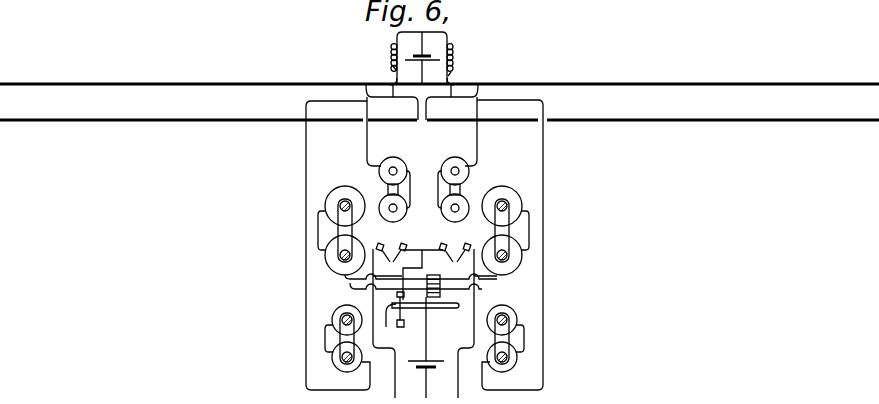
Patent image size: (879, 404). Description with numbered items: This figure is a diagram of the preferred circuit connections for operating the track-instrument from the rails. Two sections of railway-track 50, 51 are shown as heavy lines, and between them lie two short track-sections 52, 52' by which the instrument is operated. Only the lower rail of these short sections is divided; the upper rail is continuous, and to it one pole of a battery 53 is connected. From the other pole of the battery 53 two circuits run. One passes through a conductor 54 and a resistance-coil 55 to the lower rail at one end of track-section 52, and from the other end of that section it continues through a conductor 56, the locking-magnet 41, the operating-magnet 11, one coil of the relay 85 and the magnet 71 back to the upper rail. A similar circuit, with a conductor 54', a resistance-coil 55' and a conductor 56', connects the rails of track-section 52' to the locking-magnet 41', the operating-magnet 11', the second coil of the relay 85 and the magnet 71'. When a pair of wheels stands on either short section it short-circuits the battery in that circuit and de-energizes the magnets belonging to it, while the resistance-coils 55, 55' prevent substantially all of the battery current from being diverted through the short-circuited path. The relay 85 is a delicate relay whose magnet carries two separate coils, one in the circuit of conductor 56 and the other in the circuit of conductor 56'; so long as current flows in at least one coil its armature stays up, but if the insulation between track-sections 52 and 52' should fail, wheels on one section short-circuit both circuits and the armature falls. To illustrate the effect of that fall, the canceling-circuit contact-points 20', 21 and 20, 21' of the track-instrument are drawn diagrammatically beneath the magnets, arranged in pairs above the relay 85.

The section of railway-track 50 is at (653, 102).
The section of railway-track 51 is at (208, 102).
The short track-section 52 is at (452, 102).
The short track-section 52' is at (391, 102).
The battery 53 is at (422, 58).
The conductor 54 is at (464, 70).
The conductor 54' is at (375, 70).
The resistance-coil 55 is at (459, 52).
The resistance-coil 55' is at (381, 56).
The conductor 56 is at (519, 243).
The conductor 56' is at (324, 243).
The operating-magnet 11 is at (511, 225).
The operating-magnet 11' is at (337, 226).
The locking-magnet 41 is at (470, 189).
The locking-magnet 41' is at (381, 189).
The magnet 71 is at (513, 330).
The magnet 71' is at (337, 332).
The canceling-circuit contact-point 20 is at (377, 244).
The canceling-circuit contact-point 20' is at (471, 244).
The canceling-circuit contact-point 21 is at (442, 244).
The canceling-circuit contact-point 21' is at (404, 244).
The relay 85 is at (446, 286).